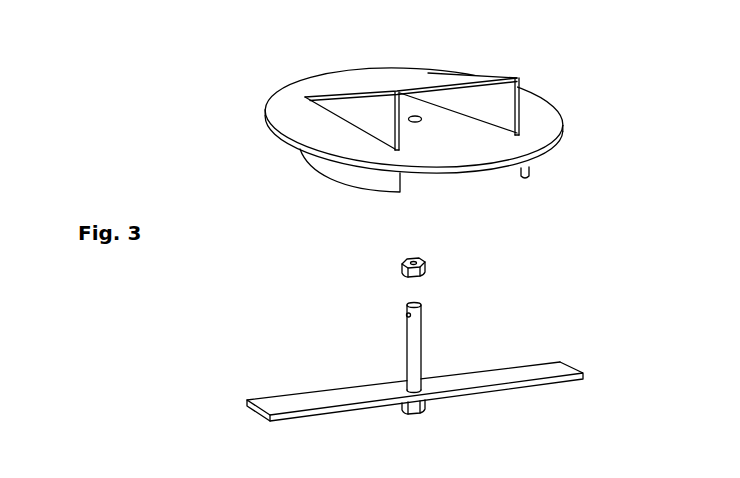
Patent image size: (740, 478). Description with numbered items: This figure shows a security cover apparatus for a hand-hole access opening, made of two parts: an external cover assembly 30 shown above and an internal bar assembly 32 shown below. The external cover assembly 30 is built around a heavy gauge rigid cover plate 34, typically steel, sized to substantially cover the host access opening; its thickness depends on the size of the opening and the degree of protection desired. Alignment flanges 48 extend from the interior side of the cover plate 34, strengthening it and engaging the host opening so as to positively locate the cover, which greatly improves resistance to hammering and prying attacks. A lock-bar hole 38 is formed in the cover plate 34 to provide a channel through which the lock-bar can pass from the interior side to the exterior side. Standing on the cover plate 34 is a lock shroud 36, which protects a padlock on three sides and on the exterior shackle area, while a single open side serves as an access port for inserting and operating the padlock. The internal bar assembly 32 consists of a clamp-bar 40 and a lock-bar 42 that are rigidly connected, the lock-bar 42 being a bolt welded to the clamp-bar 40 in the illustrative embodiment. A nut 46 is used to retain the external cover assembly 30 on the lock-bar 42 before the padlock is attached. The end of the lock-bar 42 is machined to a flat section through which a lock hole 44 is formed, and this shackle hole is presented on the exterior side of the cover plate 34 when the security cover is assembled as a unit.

The external cover assembly 30 is at (217, 132).
The internal bar assembly 32 is at (205, 334).
The cover plate 34 is at (557, 108).
The lock shroud 36 is at (512, 77).
The lock-bar hole 38 is at (422, 120).
The clamp-bar 40 is at (521, 366).
The lock-bar 42 is at (407, 343).
The lock hole 44 is at (407, 313).
The nut 46 is at (426, 266).
The alignment flanges 48 is at (353, 185).